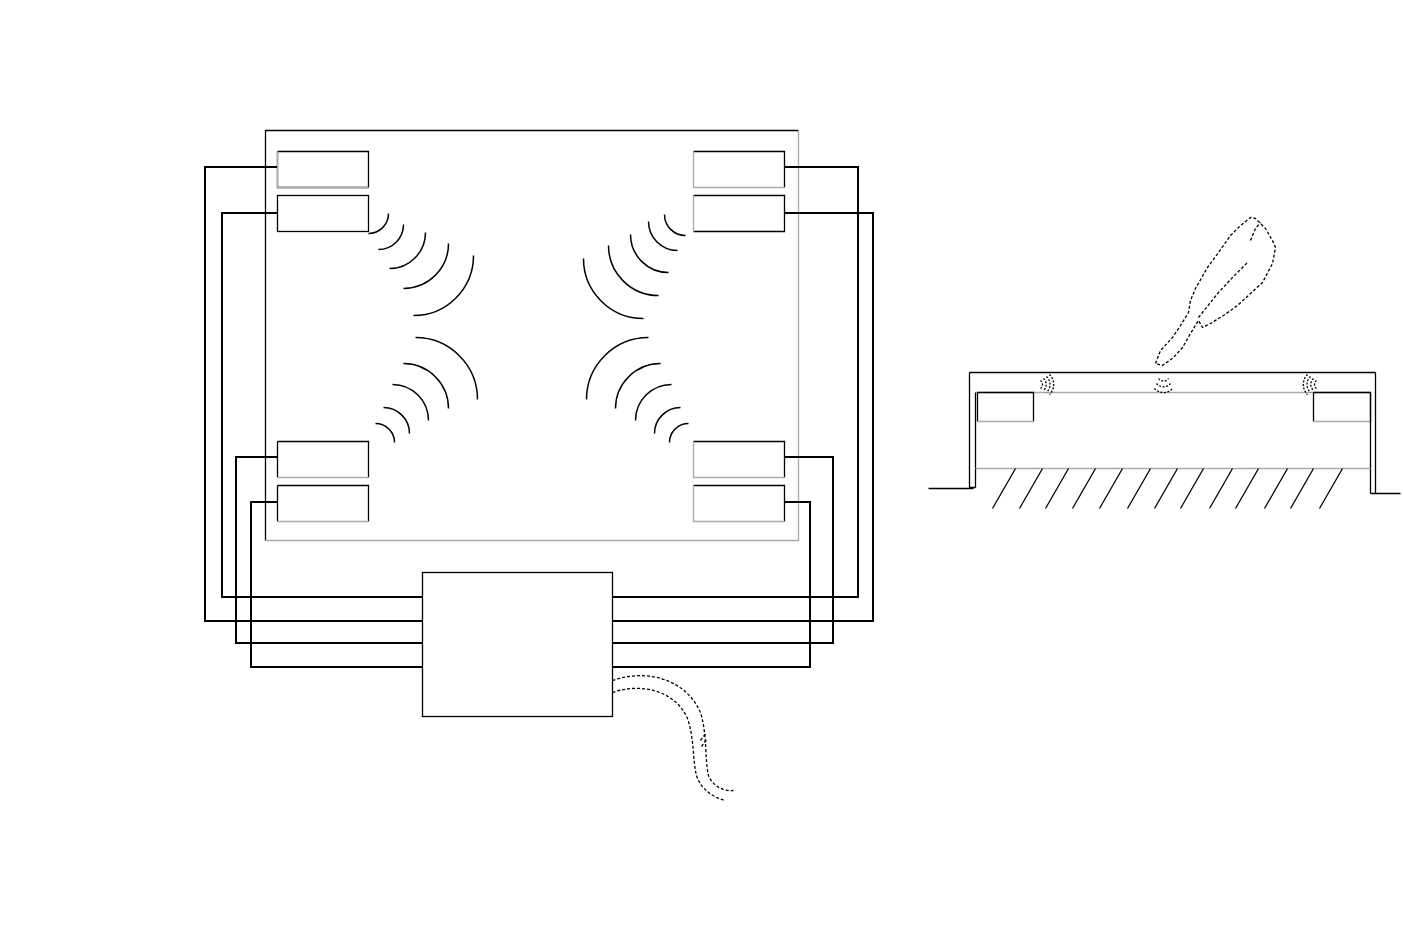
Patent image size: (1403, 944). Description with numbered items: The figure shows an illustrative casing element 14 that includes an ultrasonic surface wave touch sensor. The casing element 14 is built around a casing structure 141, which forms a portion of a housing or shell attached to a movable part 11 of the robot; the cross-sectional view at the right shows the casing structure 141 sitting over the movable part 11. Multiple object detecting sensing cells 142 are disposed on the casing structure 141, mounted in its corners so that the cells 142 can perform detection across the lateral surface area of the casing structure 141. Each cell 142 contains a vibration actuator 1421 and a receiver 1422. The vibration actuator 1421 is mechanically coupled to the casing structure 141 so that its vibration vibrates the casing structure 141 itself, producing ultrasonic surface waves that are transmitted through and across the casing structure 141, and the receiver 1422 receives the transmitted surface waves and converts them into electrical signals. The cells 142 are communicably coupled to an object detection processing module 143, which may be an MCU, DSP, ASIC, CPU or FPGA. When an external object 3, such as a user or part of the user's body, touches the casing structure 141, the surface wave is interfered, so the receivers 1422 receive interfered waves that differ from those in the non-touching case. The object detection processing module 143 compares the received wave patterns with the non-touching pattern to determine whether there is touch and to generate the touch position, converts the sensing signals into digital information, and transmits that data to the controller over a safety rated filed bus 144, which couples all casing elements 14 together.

The casing element 14 is at (222, 105).
The casing structure 141 is at (481, 133).
The object detecting sensing cells 142 is at (708, 212).
The vibration actuator 1421 is at (768, 219).
The receiver 1422 is at (768, 176).
The object detection processing module 143 is at (430, 685).
The safety rated filed bus 144 is at (707, 717).
The external object 3 is at (1252, 238).
The movable part 11 is at (1230, 487).